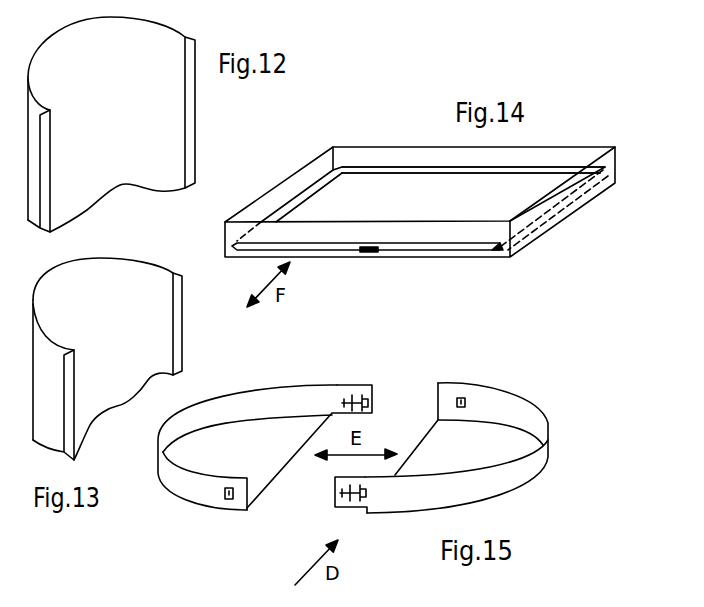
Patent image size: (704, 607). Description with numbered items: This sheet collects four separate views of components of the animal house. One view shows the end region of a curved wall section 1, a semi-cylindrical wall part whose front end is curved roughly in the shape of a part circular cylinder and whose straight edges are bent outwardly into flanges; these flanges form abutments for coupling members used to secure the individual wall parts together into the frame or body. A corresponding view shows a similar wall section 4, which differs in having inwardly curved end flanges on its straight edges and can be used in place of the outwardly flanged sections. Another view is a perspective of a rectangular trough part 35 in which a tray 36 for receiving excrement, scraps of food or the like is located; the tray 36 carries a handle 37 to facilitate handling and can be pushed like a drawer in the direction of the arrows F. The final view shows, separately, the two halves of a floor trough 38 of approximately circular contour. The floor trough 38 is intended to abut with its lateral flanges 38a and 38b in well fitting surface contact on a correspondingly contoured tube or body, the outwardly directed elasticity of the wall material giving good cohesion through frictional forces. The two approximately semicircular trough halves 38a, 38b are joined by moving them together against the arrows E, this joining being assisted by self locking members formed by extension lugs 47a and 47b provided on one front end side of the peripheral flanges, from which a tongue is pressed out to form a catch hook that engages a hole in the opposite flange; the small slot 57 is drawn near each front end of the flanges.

In FIG. 12, the wall section 1 is at (125, 138).
In FIG. 13, the wall section 4 is at (130, 292).
In FIG. 14, the rectangular trough part 35 is at (420, 200).
In FIG. 14, the tray 36 is at (397, 185).
In FIG. 14, the handle 37 is at (372, 253).
In FIG. 15, the floor trough 38 is at (362, 447).
In FIG. 15, the lateral flange 38a is at (202, 488).
In FIG. 15, the lateral flange 38b is at (507, 483).
In FIG. 15, the extension lug 47a is at (353, 395).
In FIG. 15, the extension lug 47b is at (335, 507).
In FIG. 15, the slot / aperture 57 is at (230, 498).